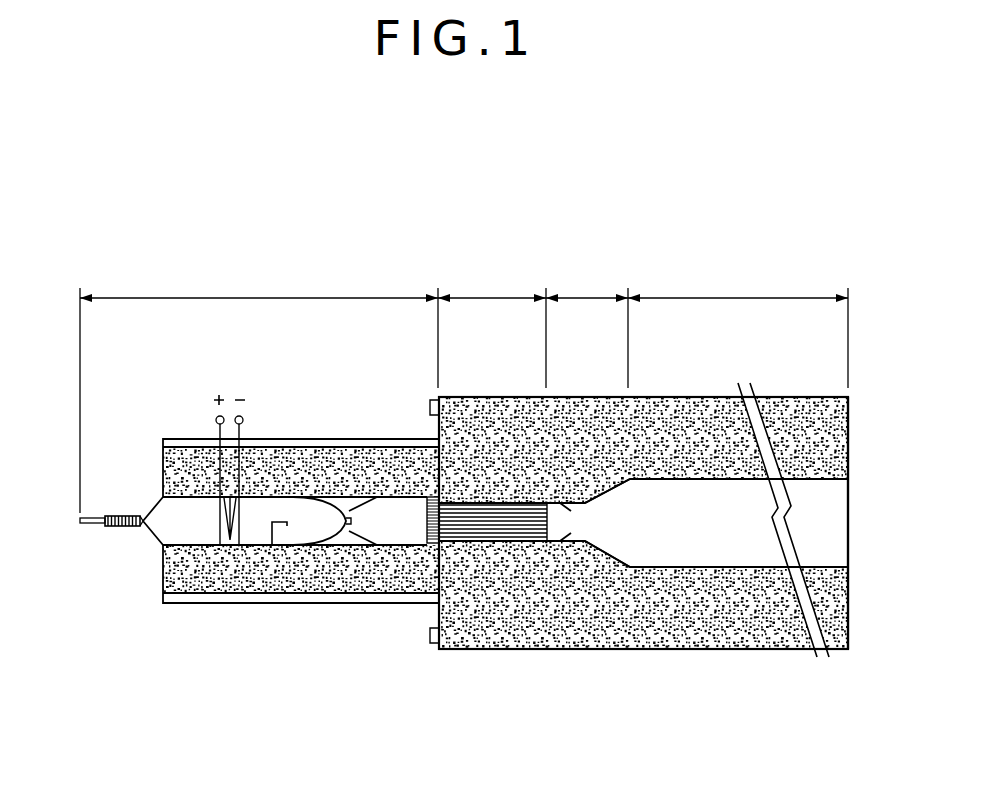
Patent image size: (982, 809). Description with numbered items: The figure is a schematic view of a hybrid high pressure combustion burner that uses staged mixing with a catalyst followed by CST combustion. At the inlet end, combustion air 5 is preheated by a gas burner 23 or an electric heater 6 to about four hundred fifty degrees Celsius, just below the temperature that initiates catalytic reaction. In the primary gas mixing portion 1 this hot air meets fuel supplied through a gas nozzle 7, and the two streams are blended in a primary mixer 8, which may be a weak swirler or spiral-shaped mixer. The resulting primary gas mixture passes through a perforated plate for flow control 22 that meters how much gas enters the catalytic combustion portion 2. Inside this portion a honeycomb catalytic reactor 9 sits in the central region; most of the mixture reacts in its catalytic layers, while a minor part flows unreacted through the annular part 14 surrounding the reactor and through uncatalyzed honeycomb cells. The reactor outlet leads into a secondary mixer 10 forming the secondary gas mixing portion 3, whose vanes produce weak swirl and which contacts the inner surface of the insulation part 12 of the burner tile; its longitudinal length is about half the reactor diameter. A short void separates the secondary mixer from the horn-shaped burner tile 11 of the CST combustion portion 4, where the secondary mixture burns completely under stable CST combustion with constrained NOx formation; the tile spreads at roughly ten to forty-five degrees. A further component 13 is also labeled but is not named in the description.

The primary gas mixing portion 1 is at (259, 387).
The catalytic combustion portion 2 is at (492, 325).
The secondary gas mixing portion 3 is at (587, 325).
The CST combustion portion 4 is at (738, 325).
The combustion air 5 is at (80, 523).
The electric heater 6 is at (220, 545).
The gas nozzle 7 is at (272, 545).
The primary mixer 8 is at (342, 535).
The catalytic reactor 9 is at (528, 545).
The secondary mixer 10 is at (566, 546).
The burner tile 11 is at (678, 543).
The insulation part 12 is at (757, 635).
The outlet end 13 is at (835, 650).
The annular part 14 is at (480, 545).
The perforated plate for flow control 22 is at (437, 547).
The gas burner 23 is at (120, 527).